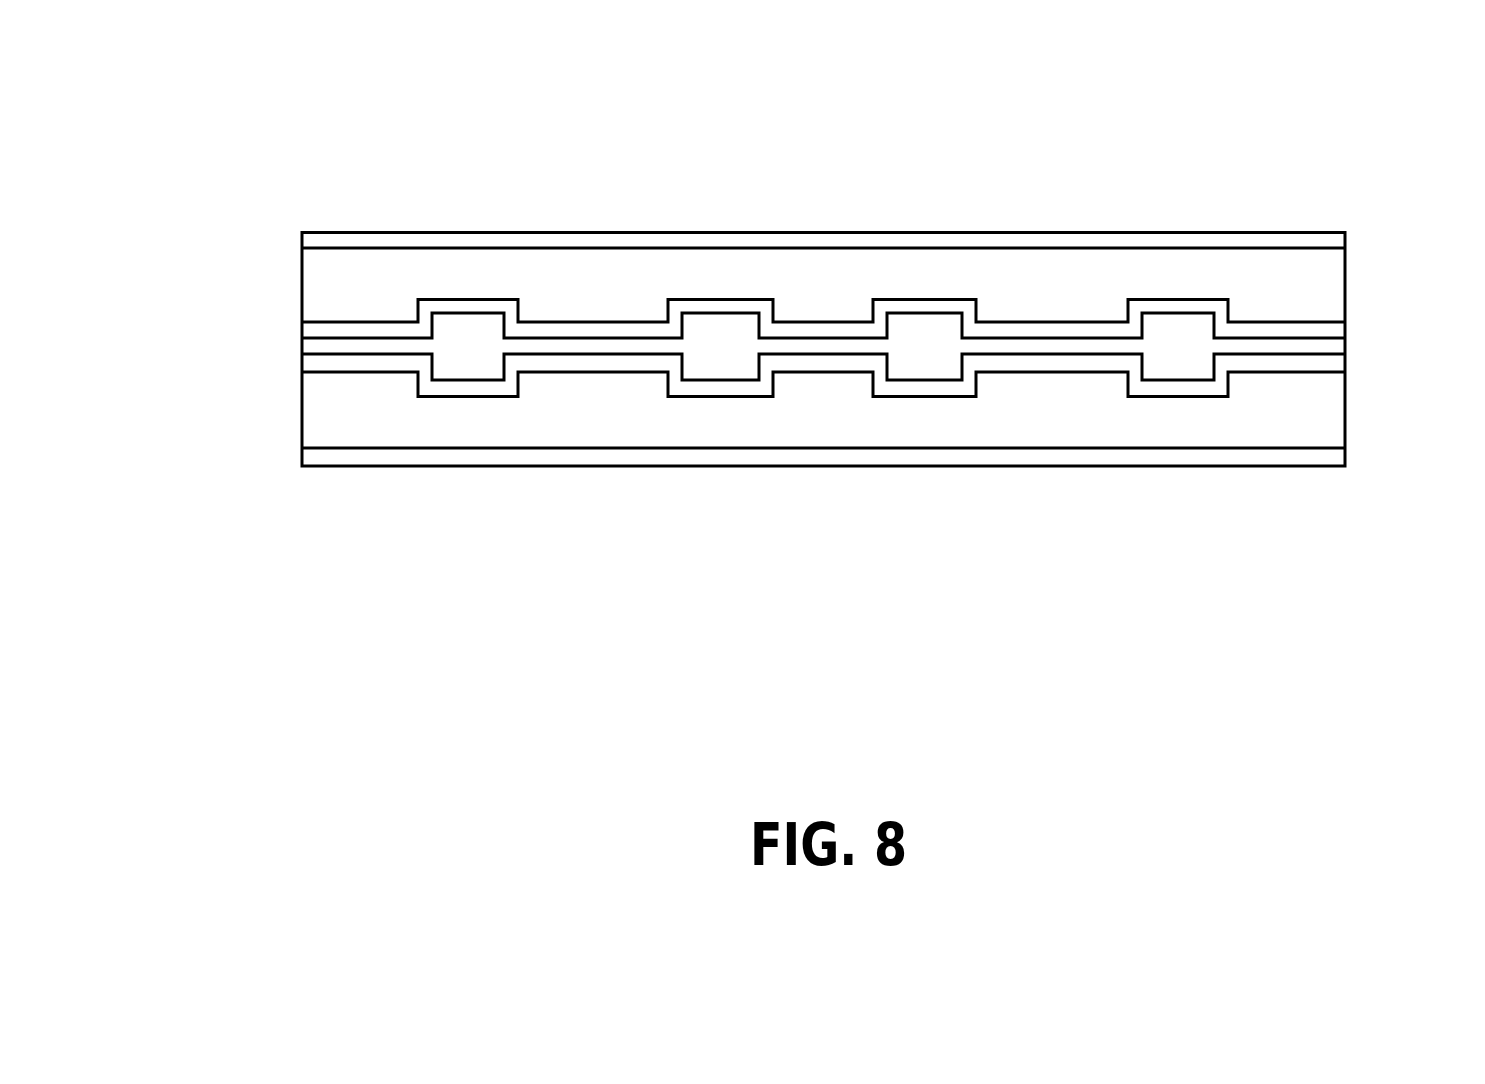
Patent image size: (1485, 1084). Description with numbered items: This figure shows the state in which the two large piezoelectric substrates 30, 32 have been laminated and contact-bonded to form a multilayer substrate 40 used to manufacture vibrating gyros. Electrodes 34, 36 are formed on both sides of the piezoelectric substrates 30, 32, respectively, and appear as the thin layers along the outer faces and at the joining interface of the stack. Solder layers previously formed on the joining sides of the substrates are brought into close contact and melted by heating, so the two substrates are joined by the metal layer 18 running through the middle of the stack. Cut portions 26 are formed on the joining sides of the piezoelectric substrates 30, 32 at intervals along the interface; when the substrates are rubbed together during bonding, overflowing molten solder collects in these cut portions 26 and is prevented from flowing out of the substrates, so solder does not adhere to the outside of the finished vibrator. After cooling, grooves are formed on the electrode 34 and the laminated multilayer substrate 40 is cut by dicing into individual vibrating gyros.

The multilayer substrate 40 is at (400, 191).
The metal layer 18 is at (313, 348).
The cut portions 26 is at (477, 314).
The piezoelectric substrate 30 is at (1319, 276).
The piezoelectric substrate 32 is at (1319, 412).
The electrode 34 is at (1311, 238).
The electrode 36 is at (1332, 362).